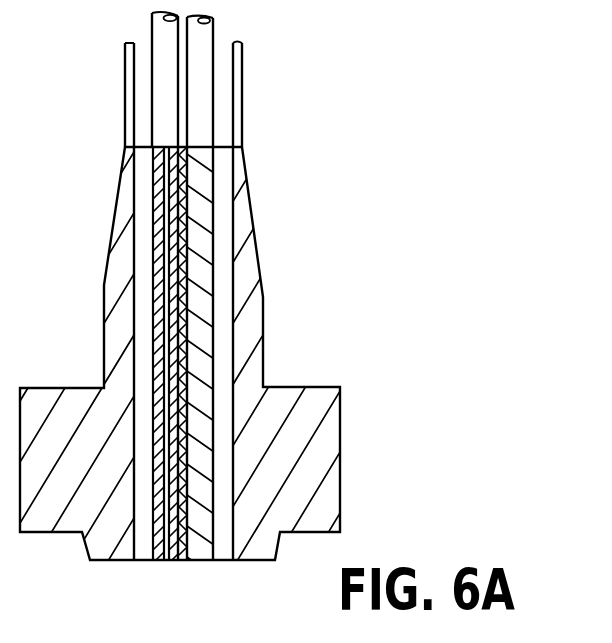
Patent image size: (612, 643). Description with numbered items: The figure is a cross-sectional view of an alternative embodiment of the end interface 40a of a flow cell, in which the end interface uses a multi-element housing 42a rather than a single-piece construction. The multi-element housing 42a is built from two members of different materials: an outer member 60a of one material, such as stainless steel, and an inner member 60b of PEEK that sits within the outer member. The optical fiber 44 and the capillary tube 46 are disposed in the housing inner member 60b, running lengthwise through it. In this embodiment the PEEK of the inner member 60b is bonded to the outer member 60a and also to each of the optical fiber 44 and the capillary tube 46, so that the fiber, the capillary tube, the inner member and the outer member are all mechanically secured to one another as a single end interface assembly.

The end interface 40a is at (306, 288).
The multi-element housing 42a is at (306, 288).
The optical fiber 44 is at (200, 147).
The capillary tube 46 is at (158, 147).
The outer member 60a is at (252, 217).
The inner member 60b is at (225, 147).